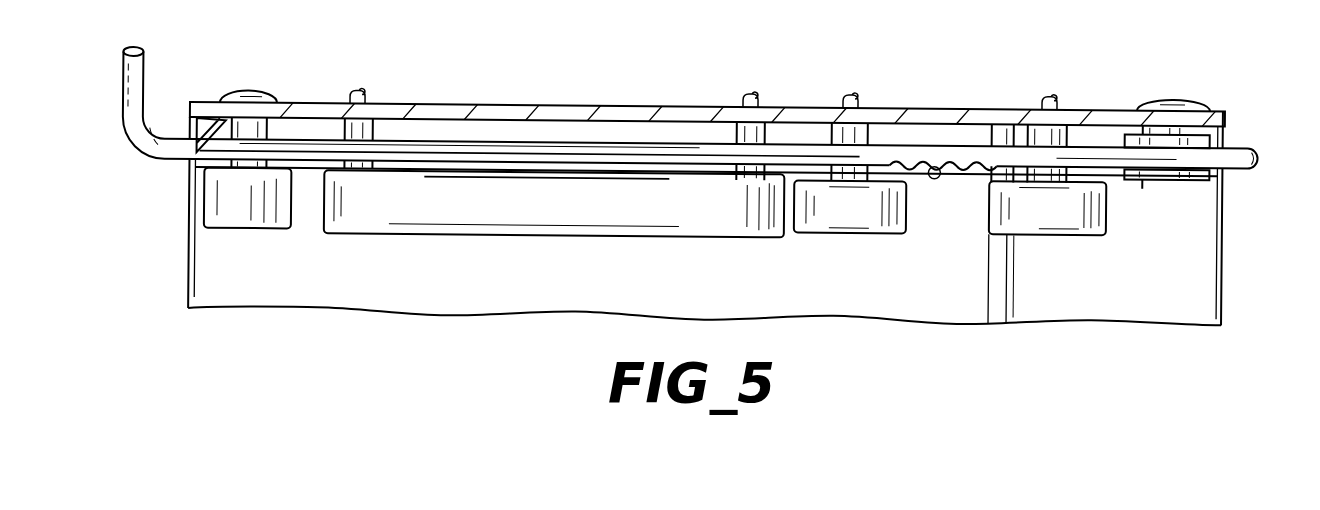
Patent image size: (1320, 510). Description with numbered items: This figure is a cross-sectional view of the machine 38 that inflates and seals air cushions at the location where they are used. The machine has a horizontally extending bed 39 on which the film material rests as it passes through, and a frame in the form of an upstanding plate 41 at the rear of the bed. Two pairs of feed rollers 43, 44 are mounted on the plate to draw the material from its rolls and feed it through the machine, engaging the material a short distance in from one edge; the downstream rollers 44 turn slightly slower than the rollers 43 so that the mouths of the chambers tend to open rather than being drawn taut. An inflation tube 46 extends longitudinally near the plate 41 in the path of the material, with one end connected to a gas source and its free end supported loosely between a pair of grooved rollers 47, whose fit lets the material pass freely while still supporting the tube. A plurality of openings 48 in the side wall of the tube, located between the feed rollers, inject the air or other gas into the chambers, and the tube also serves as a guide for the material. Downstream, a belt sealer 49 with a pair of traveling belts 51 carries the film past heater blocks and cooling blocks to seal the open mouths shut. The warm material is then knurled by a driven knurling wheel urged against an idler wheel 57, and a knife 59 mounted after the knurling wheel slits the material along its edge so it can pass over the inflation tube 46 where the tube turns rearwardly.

The machine 38 is at (483, 97).
The bed 39 is at (620, 289).
The upstanding plate 41 is at (803, 115).
The feed rollers 43 is at (1042, 217).
The feed rollers 44 is at (840, 218).
The inflation tube 46 is at (1104, 160).
The grooved rollers 47 is at (1157, 181).
The openings 48 is at (932, 160).
The belt sealer 49 is at (610, 179).
The traveling belts 51 is at (466, 215).
The idler wheel 57 is at (248, 217).
The knife 59 is at (208, 127).